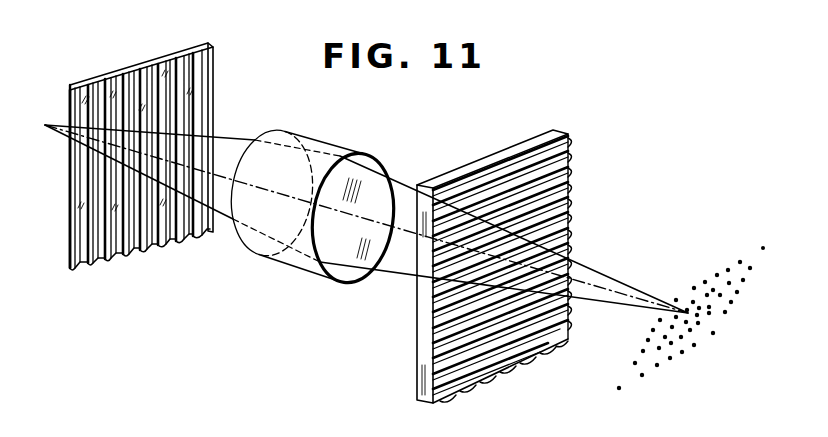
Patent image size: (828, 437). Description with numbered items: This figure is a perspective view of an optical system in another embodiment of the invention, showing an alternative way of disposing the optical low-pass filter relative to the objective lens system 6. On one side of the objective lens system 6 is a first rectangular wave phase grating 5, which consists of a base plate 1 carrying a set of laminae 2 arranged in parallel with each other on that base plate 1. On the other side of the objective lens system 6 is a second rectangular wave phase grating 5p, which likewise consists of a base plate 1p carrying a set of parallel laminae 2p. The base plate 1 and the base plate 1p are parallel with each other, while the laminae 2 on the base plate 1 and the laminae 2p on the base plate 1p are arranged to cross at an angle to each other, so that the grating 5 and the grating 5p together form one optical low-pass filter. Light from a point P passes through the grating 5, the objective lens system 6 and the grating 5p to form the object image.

The object point / light source P is at (45, 125).
The base plate 1 is at (85, 80).
The laminae 2 is at (207, 75).
The rectangular wave phase grating 5 is at (150, 60).
The objective lens system 6 is at (317, 138).
The base plate 1p is at (463, 168).
The laminae 2p is at (573, 165).
The rectangular wave phase grating 5p is at (515, 136).